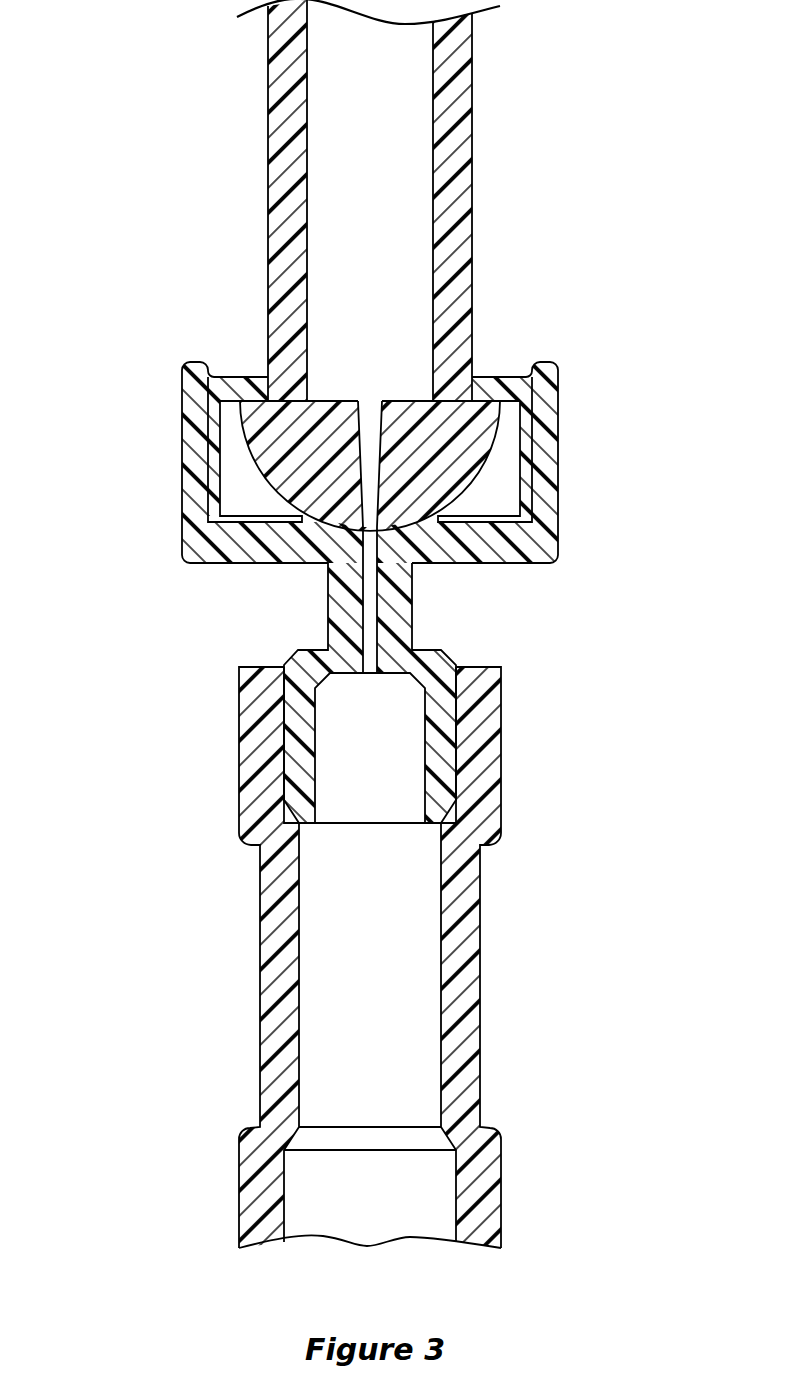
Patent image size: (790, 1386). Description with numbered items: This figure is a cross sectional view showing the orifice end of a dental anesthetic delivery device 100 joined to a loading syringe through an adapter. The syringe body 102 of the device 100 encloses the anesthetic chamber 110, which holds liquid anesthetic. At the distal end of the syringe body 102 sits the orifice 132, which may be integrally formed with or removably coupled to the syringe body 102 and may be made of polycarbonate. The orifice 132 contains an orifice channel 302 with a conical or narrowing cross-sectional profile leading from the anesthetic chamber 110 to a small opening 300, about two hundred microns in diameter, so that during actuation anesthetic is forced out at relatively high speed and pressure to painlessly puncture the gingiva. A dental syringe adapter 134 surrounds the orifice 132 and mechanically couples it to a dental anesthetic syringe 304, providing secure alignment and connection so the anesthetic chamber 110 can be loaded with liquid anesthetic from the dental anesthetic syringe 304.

The dental anesthetic delivery device 100 is at (247, 160).
The syringe body 102 is at (472, 77).
The anesthetic chamber 110 is at (403, 183).
The orifice 132 is at (483, 375).
The dental syringe adapter 134 is at (558, 467).
The opening 300 is at (367, 523).
The orifice channel 302 is at (370, 428).
The dental anesthetic syringe 304 is at (485, 812).